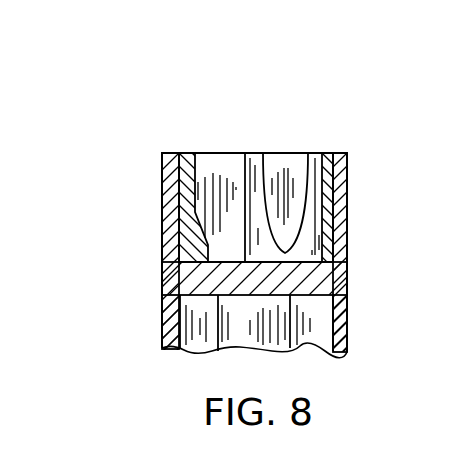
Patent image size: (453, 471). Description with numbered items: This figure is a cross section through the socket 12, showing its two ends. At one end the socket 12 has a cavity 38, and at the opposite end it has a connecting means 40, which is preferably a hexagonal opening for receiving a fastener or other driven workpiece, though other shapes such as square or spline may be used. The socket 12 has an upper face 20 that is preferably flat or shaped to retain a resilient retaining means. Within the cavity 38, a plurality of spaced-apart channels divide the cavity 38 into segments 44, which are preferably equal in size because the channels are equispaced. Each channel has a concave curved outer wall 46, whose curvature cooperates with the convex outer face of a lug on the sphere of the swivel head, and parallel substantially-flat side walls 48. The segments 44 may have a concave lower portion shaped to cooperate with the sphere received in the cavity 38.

The socket 12 is at (122, 148).
The upper face 20 is at (183, 153).
The cavity 38 is at (185, 224).
The connecting means 40 is at (327, 332).
The segments 44 is at (203, 163).
The concave curved outer wall 46 is at (222, 158).
The side walls 48 is at (252, 163).